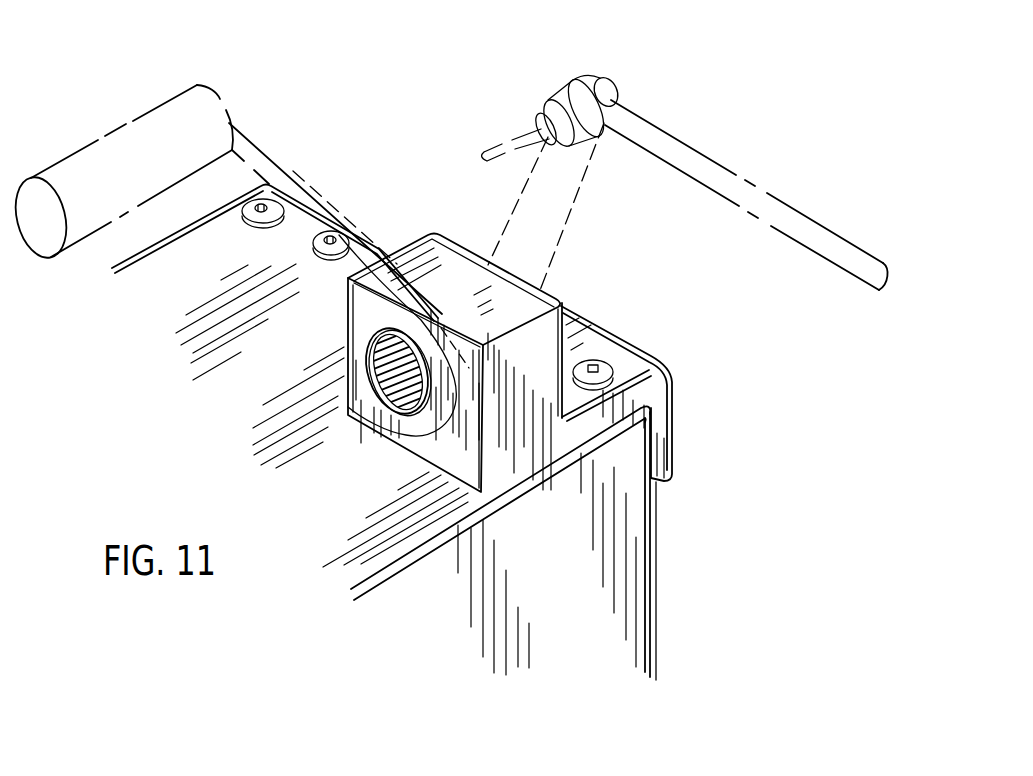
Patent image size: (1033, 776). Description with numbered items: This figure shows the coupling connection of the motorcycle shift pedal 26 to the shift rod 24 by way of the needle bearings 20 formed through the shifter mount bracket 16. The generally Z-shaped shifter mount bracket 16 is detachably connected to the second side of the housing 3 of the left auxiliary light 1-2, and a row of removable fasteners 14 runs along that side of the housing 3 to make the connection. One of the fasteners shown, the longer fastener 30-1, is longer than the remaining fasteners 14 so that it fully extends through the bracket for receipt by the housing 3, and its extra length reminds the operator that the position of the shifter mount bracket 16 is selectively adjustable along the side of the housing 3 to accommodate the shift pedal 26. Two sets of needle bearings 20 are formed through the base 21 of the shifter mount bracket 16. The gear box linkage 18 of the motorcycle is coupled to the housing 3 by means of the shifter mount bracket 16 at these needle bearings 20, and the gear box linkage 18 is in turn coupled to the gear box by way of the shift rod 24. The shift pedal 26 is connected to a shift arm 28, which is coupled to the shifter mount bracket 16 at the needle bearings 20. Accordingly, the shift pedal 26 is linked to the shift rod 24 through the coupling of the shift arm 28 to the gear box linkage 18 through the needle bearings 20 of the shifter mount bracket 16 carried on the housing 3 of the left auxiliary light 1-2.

The housing 3 is at (655, 590).
The removable fasteners 14 is at (332, 245).
The shifter mount bracket 16 is at (556, 345).
The gear box linkage 18 is at (578, 212).
The needle bearings 20 is at (398, 394).
The base 21 is at (527, 440).
The shift rod 24 is at (838, 264).
The shift pedal 26 is at (87, 237).
The shift arm 28 is at (280, 163).
The longer fastener 30-1 is at (597, 364).
The left auxiliary light 1-2 is at (703, 449).